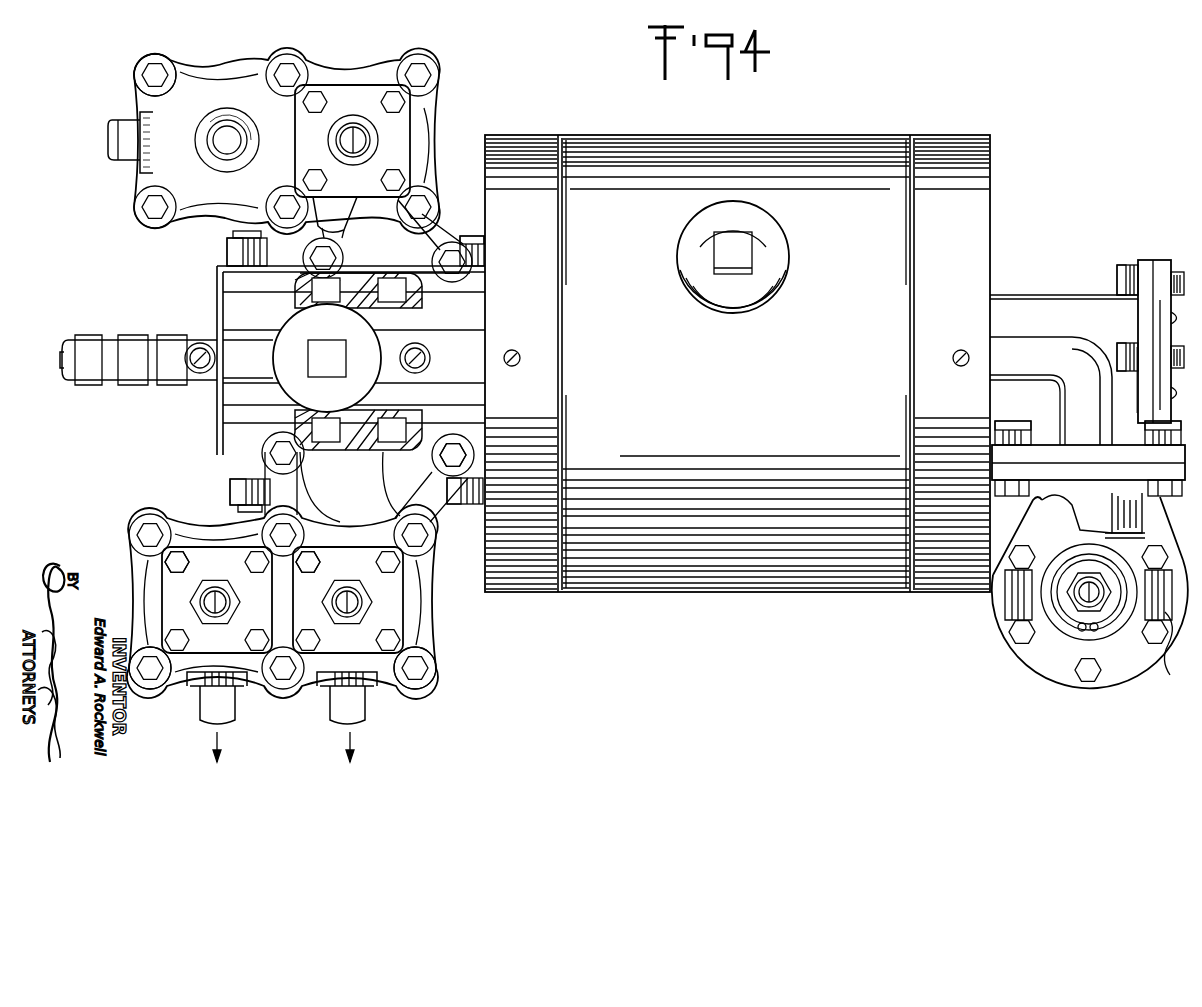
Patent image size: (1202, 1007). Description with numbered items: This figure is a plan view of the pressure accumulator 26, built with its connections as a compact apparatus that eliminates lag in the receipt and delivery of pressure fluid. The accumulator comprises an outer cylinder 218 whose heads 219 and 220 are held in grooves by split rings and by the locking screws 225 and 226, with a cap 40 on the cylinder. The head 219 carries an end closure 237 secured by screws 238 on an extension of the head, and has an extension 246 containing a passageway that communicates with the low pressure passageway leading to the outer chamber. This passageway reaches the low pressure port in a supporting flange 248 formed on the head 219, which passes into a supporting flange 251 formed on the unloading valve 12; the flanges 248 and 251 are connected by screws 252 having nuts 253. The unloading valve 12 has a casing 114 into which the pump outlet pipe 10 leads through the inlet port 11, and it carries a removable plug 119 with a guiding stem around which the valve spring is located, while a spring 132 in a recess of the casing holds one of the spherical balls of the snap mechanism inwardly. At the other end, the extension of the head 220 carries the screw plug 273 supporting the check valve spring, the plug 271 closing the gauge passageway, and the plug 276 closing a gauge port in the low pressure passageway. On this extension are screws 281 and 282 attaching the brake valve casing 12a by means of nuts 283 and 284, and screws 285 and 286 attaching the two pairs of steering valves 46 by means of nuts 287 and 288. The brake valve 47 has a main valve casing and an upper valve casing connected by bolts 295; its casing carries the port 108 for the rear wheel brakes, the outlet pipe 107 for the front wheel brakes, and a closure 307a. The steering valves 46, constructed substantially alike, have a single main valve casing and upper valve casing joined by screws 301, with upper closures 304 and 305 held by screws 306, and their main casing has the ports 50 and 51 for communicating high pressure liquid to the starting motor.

The outer cylinder 218 is at (722, 136).
The pressure accumulator 26 is at (842, 128).
The cap 40 is at (780, 252).
The locking screw 226 is at (513, 350).
The locking screw 225 is at (961, 350).
The brake valve casing 12a is at (232, 56).
The brake valve 47 is at (325, 56).
The bolts 295 is at (140, 75).
The outlet pipe 107 is at (230, 130).
The port 108 is at (122, 160).
The closure 307a is at (400, 140).
The nut 283 is at (455, 282).
The screw 282 is at (471, 236).
The screw 281 is at (232, 234).
The nut 284 is at (226, 258).
The head 220 is at (351, 360).
The screw plug 273 is at (296, 335).
The plug 271 is at (60, 360).
The plug 276 is at (200, 344).
The steering valves 46 is at (148, 578).
The upper closure 304 is at (175, 602).
The upper closure 305 is at (392, 604).
The screws 306 is at (190, 562).
The screws 301 is at (152, 676).
The port 50 is at (208, 710).
The port 51 is at (340, 710).
The nut 288 is at (230, 488).
The screw 286 is at (240, 510).
The screw 285 is at (465, 504).
The nut 287 is at (478, 505).
The head 219 is at (1028, 336).
The extension 246 is at (1064, 402).
The end closure 237 is at (1165, 272).
The screws 238 is at (1152, 332).
The nuts 253 is at (1180, 447).
The screws 252 is at (1180, 475).
The supporting flange 248 is at (1083, 458).
The supporting flange 251 is at (1092, 466).
The inlet port 11 is at (1113, 514).
The outlet pipe 10 is at (1132, 512).
The casing 114 is at (1140, 533).
The unloading valve 12 is at (992, 632).
The removable plug 119 is at (1086, 600).
The spring 132 is at (1170, 675).